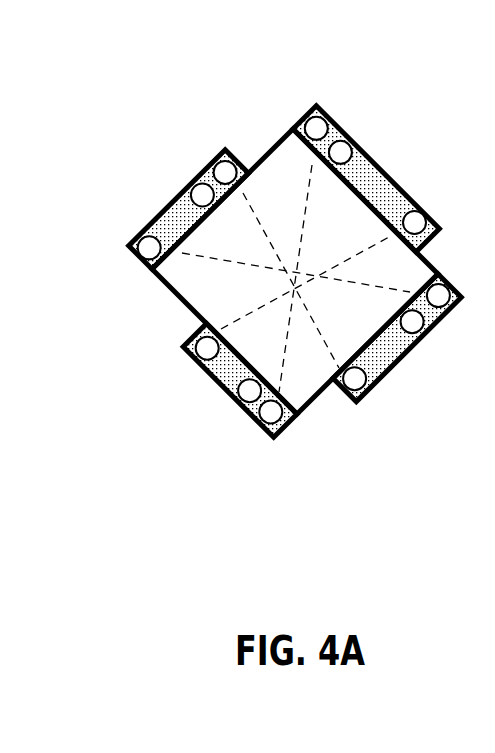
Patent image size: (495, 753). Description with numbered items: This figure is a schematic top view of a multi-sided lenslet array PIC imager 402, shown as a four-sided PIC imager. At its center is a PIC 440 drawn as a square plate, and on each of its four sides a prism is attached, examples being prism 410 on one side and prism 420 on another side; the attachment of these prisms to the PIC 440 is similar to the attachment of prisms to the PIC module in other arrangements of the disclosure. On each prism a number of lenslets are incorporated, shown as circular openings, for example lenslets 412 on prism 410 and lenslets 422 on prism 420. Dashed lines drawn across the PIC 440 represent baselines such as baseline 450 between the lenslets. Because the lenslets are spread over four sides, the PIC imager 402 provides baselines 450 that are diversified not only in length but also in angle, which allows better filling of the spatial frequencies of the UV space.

The multi-sided lenslet array PIC imager 402 is at (137, 130).
The prism 410 is at (207, 378).
The lenslets 412 is at (262, 424).
The prism 420 is at (393, 168).
The lenslets 422 is at (325, 110).
The PIC 440 is at (350, 230).
The baseline 450 is at (306, 183).